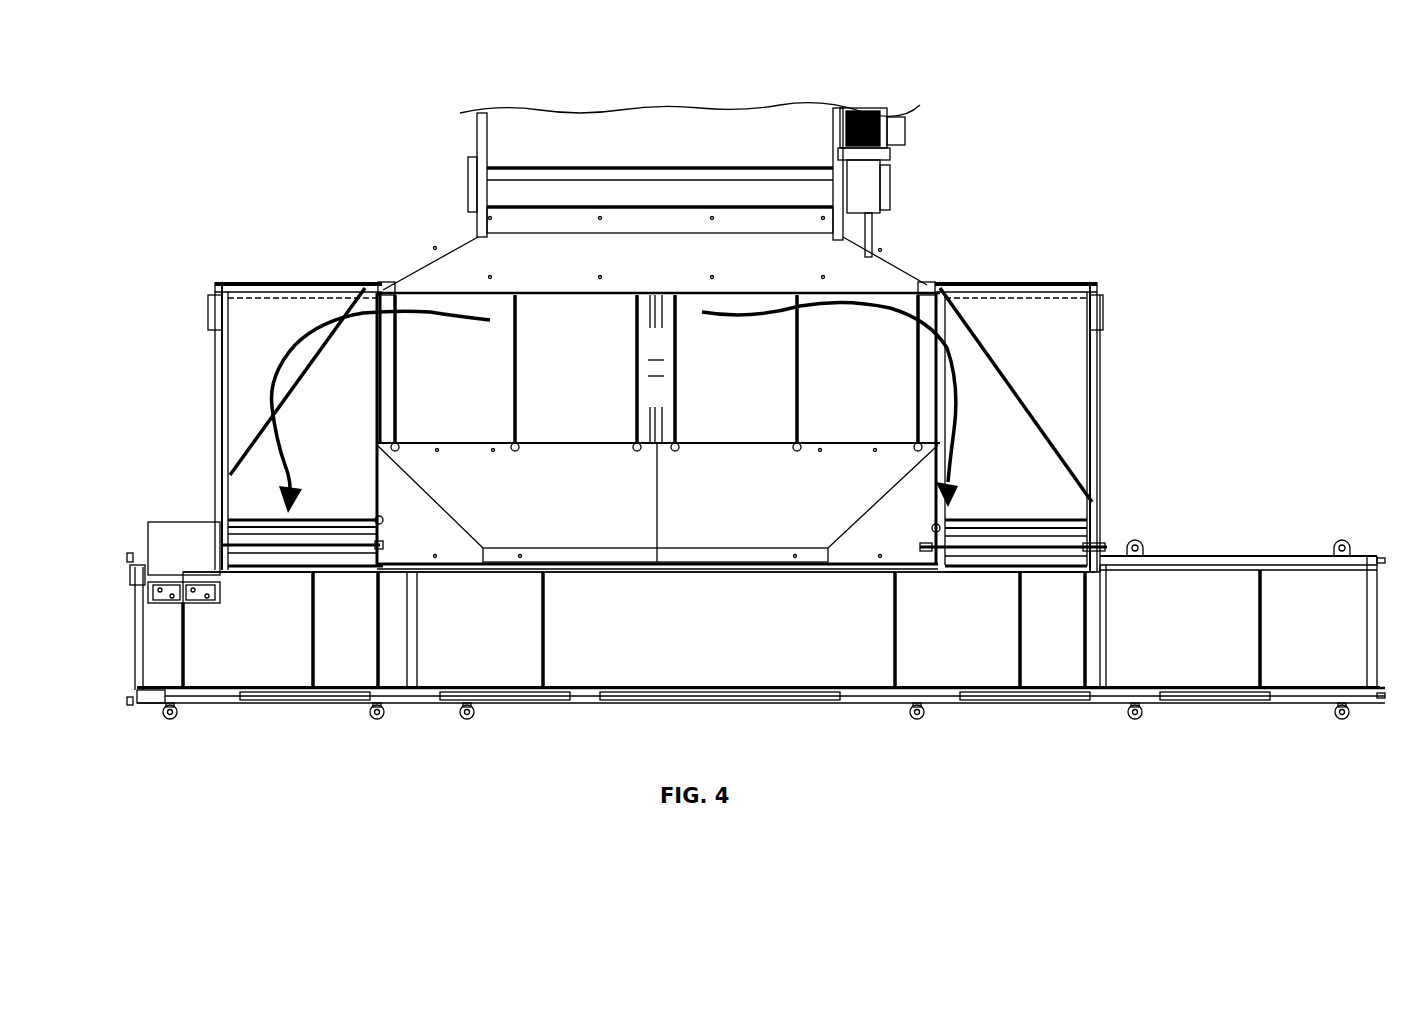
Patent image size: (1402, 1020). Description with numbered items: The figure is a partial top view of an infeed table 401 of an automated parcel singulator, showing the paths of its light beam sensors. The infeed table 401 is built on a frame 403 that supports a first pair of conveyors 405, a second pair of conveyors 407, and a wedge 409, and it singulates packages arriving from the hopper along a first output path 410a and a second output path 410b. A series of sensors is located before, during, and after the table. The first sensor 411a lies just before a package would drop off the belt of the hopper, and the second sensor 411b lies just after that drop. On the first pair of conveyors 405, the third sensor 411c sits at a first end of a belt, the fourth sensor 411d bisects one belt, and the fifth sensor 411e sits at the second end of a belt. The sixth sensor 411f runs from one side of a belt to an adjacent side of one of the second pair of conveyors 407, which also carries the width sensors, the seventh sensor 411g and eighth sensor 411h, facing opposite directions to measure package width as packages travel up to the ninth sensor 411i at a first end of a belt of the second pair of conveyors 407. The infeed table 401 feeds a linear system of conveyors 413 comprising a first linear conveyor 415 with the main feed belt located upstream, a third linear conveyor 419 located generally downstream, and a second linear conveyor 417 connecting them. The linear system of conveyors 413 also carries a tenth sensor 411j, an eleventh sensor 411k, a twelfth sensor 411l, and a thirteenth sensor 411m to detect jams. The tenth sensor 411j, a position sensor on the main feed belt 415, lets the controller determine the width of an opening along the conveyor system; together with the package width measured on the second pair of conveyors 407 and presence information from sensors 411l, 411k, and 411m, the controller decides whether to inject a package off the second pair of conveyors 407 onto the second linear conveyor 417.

The infeed table 401 is at (168, 176).
The frame 403 is at (1100, 342).
The first pair of conveyors 405 is at (572, 390).
The second pair of conveyors 407 is at (348, 425).
The wedge 409 is at (753, 524).
The first output path 410a is at (837, 307).
The second output path 410b is at (430, 312).
The first sensor 411a is at (575, 166).
The second sensor 411b is at (565, 210).
The third sensor 411c is at (675, 357).
The fourth sensor 411d is at (797, 368).
The fifth sensor 411e is at (915, 378).
The sixth sensor 411f is at (1063, 467).
The seventh sensor 411g is at (1060, 518).
The eighth sensor 411h is at (1057, 527).
The ninth sensor 411i is at (1003, 548).
The tenth sensor 411j is at (528, 622).
The eleventh sensor 411k is at (380, 645).
The twelfth sensor 411l is at (291, 622).
The thirteenth sensor 411m is at (165, 636).
The linear system of conveyors 413 is at (97, 618).
The first linear conveyor 415 is at (1335, 637).
The second linear conveyor 417 is at (740, 634).
The third linear conveyor 419 is at (288, 609).